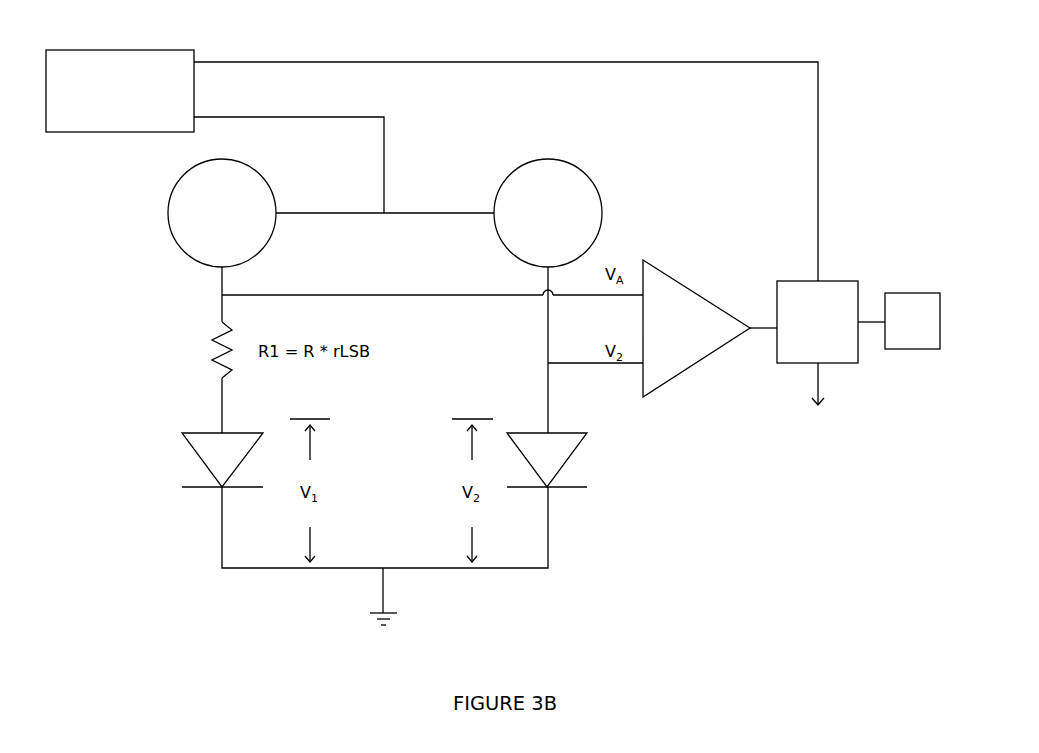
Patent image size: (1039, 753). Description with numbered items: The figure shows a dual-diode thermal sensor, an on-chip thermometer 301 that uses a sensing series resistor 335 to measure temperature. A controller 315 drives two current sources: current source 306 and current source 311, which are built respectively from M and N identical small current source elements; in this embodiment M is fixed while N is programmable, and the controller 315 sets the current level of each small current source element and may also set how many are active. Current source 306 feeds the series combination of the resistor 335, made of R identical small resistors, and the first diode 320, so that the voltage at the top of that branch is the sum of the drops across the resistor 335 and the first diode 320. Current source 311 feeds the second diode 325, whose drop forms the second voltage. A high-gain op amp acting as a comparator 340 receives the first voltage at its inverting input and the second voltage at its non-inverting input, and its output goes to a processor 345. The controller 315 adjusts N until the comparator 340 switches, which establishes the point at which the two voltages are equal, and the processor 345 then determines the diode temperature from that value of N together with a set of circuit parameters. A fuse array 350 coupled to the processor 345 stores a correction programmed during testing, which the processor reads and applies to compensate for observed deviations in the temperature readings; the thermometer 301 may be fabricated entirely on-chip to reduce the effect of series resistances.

The thermometer 301 is at (923, 43).
The controller 315 is at (104, 110).
The current source 306 is at (207, 260).
The current source 311 is at (533, 260).
The sensing series resistor 335 is at (202, 350).
The diode D1 320 is at (182, 460).
The diode D2 325 is at (587, 459).
The high-gain op amp (comparator) 340 is at (653, 338).
The processor 345 is at (803, 331).
The fuse array 350 is at (897, 330).